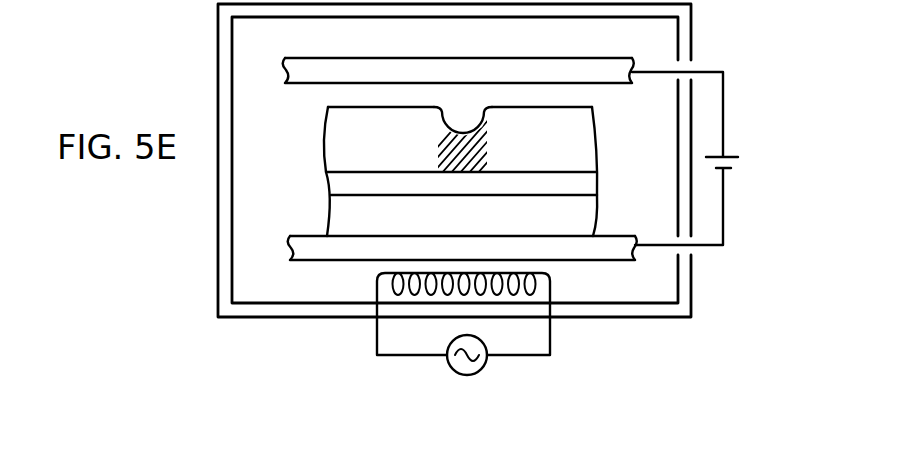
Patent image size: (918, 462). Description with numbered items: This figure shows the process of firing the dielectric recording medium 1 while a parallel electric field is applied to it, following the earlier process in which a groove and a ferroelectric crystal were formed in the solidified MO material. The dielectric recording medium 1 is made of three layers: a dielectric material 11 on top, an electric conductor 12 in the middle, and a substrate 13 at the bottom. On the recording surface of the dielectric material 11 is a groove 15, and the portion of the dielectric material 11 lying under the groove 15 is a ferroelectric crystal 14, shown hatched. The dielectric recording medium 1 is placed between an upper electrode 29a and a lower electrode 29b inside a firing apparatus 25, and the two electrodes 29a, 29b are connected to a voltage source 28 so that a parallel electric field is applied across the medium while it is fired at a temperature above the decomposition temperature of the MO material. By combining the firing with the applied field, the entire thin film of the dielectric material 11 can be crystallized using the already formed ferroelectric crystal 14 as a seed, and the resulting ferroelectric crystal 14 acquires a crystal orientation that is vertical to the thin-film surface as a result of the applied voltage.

The dielectric recording medium 1 is at (419, 131).
The dielectric material 11 is at (330, 135).
The electric conductor 12 is at (333, 182).
The substrate 13 is at (335, 211).
The ferroelectric crystal 14 is at (476, 158).
The groove 15 is at (463, 116).
The firing apparatus 25 is at (667, 332).
The DC power supply 28 is at (738, 166).
The electrode 29a is at (598, 72).
The electrode 29b is at (620, 236).